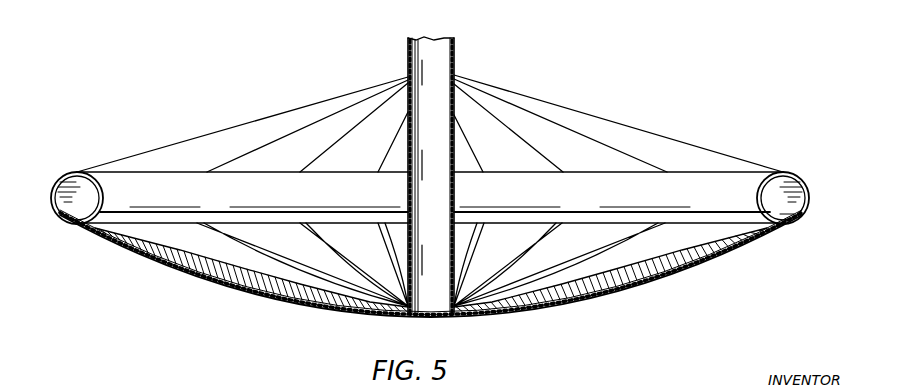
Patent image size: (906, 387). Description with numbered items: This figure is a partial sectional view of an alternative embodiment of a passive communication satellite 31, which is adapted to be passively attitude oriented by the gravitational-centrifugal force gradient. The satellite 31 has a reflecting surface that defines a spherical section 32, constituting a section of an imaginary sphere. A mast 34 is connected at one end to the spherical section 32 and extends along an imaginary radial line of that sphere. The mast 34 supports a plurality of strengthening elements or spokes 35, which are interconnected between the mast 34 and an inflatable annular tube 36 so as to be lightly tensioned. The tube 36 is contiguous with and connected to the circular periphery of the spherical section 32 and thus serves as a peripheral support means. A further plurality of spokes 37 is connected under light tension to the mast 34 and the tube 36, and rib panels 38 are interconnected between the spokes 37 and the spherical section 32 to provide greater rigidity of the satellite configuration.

The passive communication satellite 31 is at (262, 302).
The spherical section 32 is at (583, 299).
The mast 34 is at (408, 56).
The spokes 35 is at (510, 102).
The inflatable annular tube 36 is at (790, 172).
The spokes 37 is at (140, 241).
The rib panels 38 is at (163, 258).